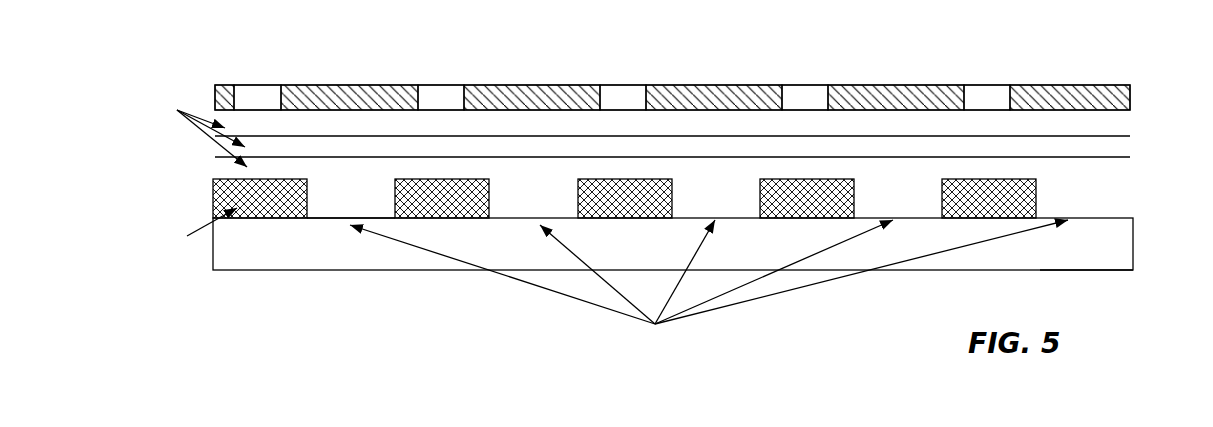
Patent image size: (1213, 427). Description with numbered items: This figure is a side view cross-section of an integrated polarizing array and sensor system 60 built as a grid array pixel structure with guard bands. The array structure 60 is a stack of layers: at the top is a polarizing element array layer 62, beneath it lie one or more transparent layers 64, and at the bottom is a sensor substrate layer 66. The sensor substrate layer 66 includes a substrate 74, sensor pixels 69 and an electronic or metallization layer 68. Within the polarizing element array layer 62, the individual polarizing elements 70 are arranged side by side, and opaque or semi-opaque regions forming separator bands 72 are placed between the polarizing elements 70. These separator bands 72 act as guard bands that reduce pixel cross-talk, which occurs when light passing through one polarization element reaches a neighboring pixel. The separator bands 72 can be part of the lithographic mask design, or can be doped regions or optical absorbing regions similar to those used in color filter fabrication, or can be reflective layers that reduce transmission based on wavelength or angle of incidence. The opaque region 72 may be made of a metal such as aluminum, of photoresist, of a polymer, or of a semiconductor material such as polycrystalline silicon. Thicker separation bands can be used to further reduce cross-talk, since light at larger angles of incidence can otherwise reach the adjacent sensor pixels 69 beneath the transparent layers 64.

The integrated polarizing array and sensor system 60 is at (142, 38).
The polarizing element array layer 62 is at (710, 81).
The transparent layers 64 is at (1141, 148).
The sensor substrate layer 66 is at (1143, 230).
The electronic or metallization layer 68 is at (213, 180).
The sensor pixels 69 is at (331, 207).
The polarizing elements 70 is at (372, 84).
The separator bands 72 is at (247, 84).
The substrate 74 is at (1085, 271).